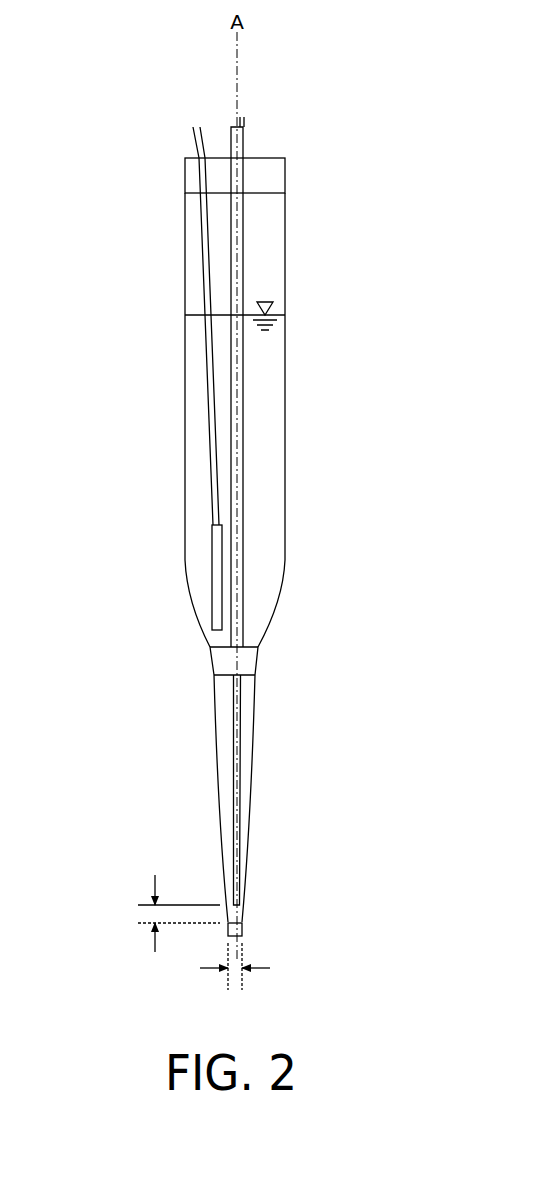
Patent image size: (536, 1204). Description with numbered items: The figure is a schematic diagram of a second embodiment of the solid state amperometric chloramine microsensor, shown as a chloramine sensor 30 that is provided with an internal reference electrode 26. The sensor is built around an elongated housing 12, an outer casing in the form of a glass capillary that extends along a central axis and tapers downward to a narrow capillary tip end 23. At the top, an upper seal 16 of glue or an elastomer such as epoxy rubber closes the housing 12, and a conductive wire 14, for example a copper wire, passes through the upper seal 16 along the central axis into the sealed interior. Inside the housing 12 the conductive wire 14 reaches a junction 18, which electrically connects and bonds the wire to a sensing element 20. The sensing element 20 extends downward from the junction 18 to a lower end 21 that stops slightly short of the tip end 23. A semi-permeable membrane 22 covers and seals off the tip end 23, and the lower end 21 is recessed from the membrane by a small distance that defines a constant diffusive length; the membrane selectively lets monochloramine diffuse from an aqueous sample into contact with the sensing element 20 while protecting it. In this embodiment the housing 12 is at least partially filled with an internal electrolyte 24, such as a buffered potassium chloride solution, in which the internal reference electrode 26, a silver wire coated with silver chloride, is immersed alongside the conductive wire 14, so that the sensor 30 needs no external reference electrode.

The housing 12 is at (285, 497).
The conductive wire 14 is at (243, 142).
The upper seal 16 is at (270, 182).
The junction 18 is at (218, 662).
The sensing element 20 is at (238, 735).
The end of sensing element 21 is at (232, 905).
The semi-permeable membrane 22 is at (237, 930).
The tip end 23 is at (242, 936).
The internal electrolyte 24 is at (265, 370).
The internal reference electrode 26 is at (217, 567).
The chloramine sensor 30 is at (128, 257).